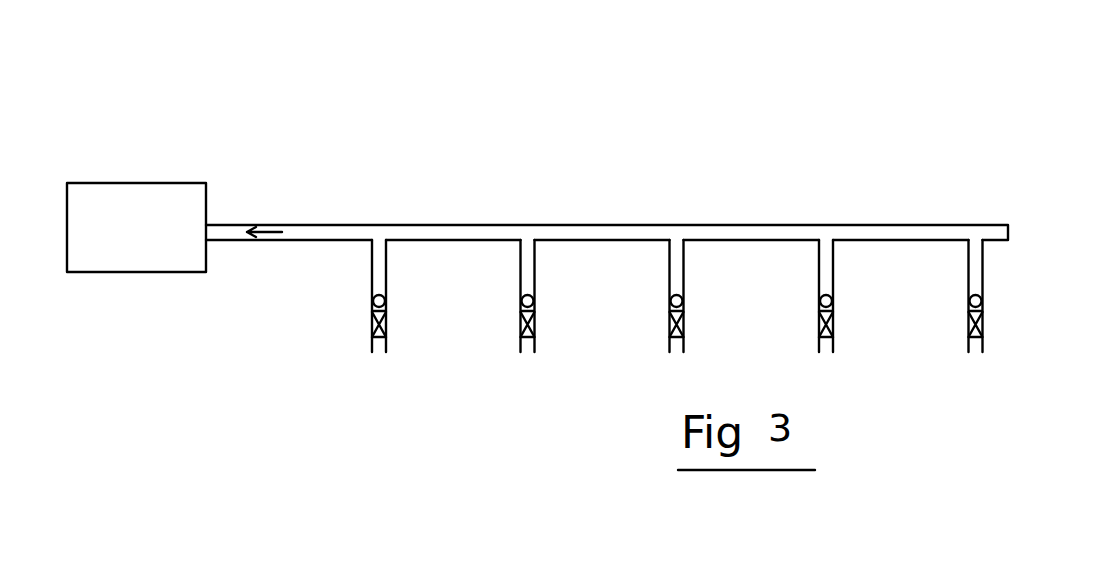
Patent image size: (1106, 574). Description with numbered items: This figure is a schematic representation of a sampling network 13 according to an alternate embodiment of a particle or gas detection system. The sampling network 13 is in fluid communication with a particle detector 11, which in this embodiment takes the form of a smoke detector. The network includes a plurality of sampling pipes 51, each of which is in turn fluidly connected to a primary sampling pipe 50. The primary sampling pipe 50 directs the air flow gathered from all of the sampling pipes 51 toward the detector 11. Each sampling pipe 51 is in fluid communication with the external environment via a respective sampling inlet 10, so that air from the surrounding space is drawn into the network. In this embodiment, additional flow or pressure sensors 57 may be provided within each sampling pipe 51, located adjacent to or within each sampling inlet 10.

The sampling network 13 is at (768, 168).
The particle detector 11 is at (135, 272).
The primary sampling pipe 50 is at (452, 231).
The sampling inlet 10 is at (370, 345).
The sampling pipe 51 is at (535, 277).
The flow or pressure sensor 57 is at (372, 303).